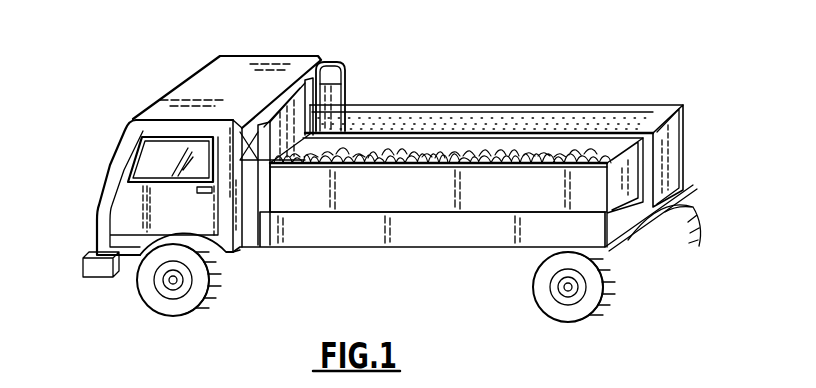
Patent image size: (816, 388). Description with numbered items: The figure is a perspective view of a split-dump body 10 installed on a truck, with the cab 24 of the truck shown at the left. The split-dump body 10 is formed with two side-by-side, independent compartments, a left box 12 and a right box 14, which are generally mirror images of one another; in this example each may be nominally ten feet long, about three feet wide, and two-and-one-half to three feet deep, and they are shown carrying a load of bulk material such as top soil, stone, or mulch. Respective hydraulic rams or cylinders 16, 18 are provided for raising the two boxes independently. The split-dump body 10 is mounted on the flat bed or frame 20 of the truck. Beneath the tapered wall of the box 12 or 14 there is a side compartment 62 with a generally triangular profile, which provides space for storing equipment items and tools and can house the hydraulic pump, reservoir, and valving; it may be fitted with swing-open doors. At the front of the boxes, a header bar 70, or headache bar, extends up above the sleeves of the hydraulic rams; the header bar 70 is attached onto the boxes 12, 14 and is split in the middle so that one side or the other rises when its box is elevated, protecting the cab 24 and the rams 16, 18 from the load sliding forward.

The split-dump body 10 is at (257, 317).
The left box 12 is at (433, 200).
The right box 14 is at (472, 105).
The hydraulic cylinder 16 is at (262, 97).
The hydraulic cylinder 18 is at (333, 88).
The flat bed 20 is at (476, 249).
The cab 24 is at (110, 164).
The side compartment 62 is at (318, 237).
The header bar 70 is at (327, 62).